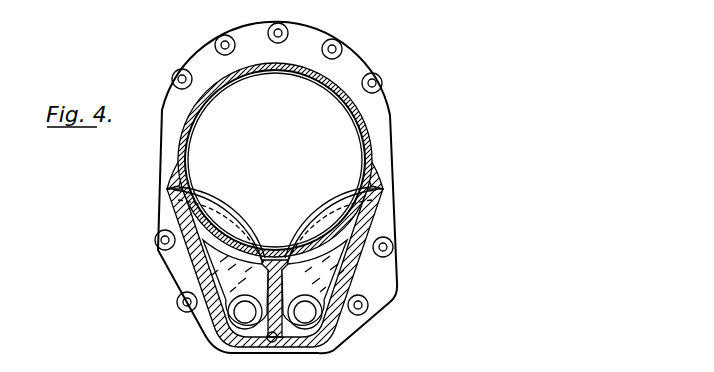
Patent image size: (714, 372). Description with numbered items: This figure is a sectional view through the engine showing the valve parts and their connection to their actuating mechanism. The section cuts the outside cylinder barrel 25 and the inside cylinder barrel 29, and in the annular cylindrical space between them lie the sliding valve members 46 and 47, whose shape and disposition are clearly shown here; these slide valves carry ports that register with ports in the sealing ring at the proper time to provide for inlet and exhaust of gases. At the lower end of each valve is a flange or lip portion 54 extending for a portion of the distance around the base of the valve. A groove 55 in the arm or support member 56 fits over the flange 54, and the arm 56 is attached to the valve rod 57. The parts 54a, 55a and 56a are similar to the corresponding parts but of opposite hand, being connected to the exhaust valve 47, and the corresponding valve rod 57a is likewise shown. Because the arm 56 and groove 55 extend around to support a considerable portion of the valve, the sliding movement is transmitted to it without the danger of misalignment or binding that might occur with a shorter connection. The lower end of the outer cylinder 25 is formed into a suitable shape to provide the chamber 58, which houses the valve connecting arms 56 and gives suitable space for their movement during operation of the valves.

The outside cylinder barrel 25 is at (378, 178).
The inside cylinder barrel 29 is at (241, 79).
The sliding valve member 46 is at (388, 152).
The exhaust valve 47 is at (193, 153).
The flange or lip portion 54 is at (375, 212).
The flange or lip portion 54a is at (182, 220).
The groove 55 is at (378, 234).
The groove 55a is at (192, 250).
The arm or support member 56 is at (355, 268).
The arm or support member 56a is at (210, 280).
The valve rod 57 is at (310, 318).
The valve rod 57a is at (236, 314).
The chamber 58 is at (366, 292).